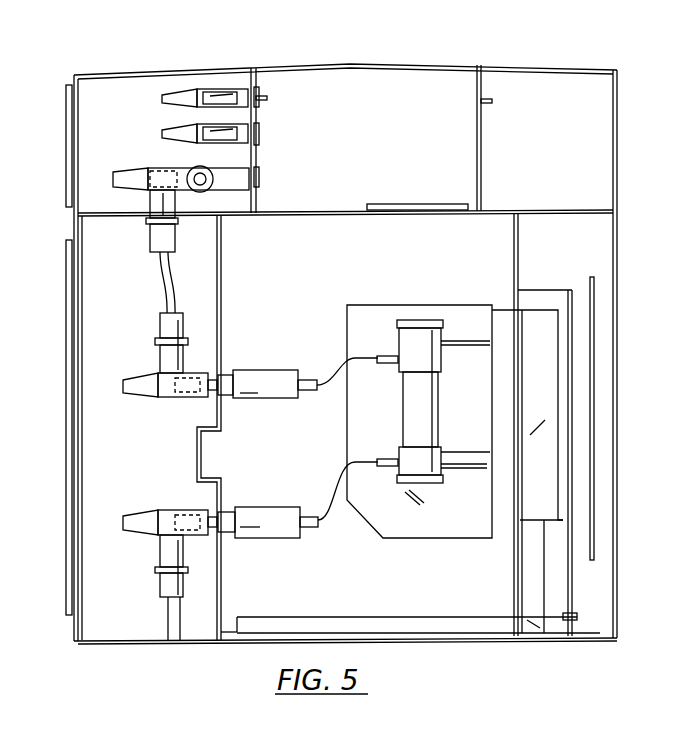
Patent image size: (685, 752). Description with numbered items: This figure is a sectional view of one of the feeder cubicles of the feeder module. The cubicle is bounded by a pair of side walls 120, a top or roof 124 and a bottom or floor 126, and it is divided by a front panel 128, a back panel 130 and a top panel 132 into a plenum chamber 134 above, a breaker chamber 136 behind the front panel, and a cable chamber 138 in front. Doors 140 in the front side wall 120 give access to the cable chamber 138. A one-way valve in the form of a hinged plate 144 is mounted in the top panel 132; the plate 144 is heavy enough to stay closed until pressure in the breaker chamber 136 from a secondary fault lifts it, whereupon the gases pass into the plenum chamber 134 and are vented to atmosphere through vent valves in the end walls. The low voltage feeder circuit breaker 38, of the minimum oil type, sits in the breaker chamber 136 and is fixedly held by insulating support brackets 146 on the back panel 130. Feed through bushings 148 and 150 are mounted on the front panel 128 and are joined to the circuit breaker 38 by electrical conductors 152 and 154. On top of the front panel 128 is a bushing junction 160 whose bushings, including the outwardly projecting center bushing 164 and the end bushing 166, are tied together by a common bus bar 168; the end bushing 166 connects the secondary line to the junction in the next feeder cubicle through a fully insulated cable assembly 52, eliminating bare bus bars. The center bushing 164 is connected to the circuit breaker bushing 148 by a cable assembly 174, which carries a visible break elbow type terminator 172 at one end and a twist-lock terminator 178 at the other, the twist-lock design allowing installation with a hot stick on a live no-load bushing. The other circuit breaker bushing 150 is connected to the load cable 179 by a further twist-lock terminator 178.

The side wall 120 is at (618, 223).
The top or roof 124 is at (303, 70).
The bottom or floor 126 is at (247, 643).
The front panel 128 is at (222, 276).
The back panel 130 is at (513, 238).
The top panel 132 is at (322, 214).
The plenum chamber 134 is at (433, 132).
The breaker chamber 136 is at (405, 271).
The cable chamber 138 is at (130, 306).
The doors 140 is at (66, 353).
The hinged plate 144 is at (400, 203).
The insulating support brackets 146 is at (475, 343).
The feed through bushing 148 is at (260, 370).
The feed through bushing 150 is at (270, 509).
The electrical conductor 152 is at (333, 358).
The electrical conductor 154 is at (333, 462).
The bushing junction 160 is at (241, 84).
The center bushing 164 is at (177, 90).
The bushing 166 is at (220, 93).
The common bus bar 168 is at (255, 122).
The elbow type cable terminator 172 is at (130, 166).
The cable assembly 174 is at (152, 262).
The twist-lock terminator 178 is at (159, 356).
The load cable 179 is at (167, 617).
The feeder breaker 38 is at (401, 409).
The cable assembly 52 is at (215, 190).